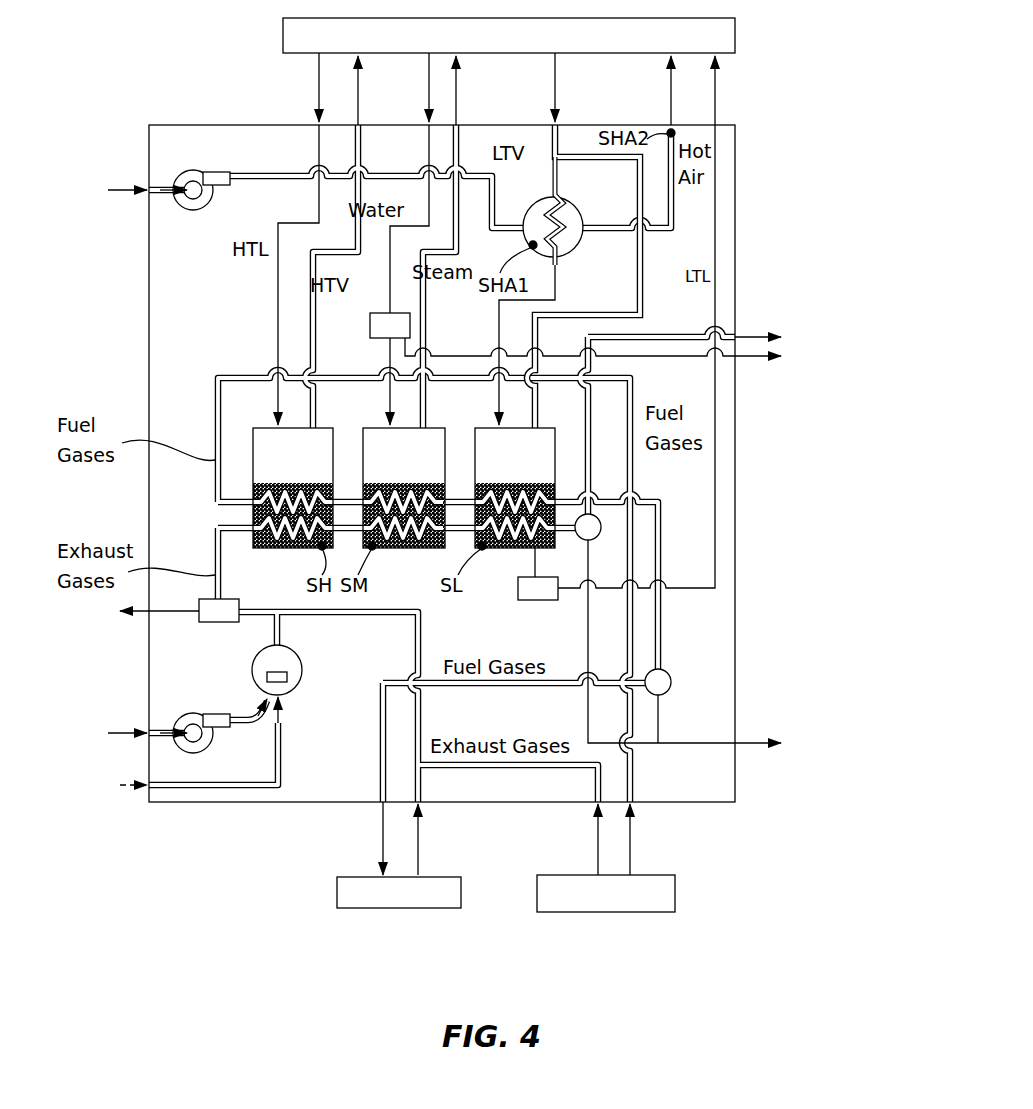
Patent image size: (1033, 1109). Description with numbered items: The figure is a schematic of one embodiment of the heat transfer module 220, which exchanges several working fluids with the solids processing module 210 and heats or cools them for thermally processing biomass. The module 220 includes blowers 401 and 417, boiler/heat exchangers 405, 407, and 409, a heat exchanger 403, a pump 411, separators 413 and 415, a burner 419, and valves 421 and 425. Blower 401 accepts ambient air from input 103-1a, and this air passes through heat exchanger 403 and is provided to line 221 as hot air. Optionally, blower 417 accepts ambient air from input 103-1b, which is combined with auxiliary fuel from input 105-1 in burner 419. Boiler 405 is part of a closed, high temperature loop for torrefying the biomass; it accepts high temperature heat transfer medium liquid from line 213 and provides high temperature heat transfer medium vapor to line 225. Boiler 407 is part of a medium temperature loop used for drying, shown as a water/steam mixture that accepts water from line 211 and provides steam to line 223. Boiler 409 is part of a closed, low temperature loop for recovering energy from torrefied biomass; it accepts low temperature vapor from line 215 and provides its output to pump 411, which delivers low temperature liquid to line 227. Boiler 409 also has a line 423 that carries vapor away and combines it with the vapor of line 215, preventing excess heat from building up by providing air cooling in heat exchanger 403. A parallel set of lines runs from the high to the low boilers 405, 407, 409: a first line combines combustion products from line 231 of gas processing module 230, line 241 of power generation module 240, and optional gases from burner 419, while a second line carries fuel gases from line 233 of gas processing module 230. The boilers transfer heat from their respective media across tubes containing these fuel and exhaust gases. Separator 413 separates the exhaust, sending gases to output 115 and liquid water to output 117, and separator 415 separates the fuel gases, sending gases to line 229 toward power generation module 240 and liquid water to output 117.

The solids processing module 210 is at (509, 35).
The heat transfer module 220 is at (156, 92).
The line 213 is at (319, 66).
The line 225 is at (358, 85).
The line 211 is at (429, 88).
The line 223 is at (458, 78).
The line 215 is at (555, 82).
The line 221 is at (671, 75).
The line 227 is at (715, 105).
The blower 401 is at (218, 170).
The heat exchanger 403 is at (622, 270).
The line 423 is at (618, 193).
The valve 425 is at (370, 324).
The boiler 405 is at (294, 558).
The boiler 407 is at (430, 558).
The boiler 409 is at (521, 558).
The pump 411 is at (517, 600).
The separator 413 is at (597, 535).
The separator 415 is at (668, 672).
The blower 417 is at (220, 712).
The burner 419 is at (306, 670).
The valve 421 is at (218, 624).
The line 229 is at (380, 830).
The line 241 is at (420, 840).
The line 231 is at (592, 815).
The line 233 is at (635, 815).
The power generation module 240 is at (399, 892).
The gas processing module 230 is at (606, 893).
The output 115 is at (143, 620).
The output 117 is at (766, 362).
The input 103-1a is at (122, 213).
The input 103-1b is at (138, 728).
The input 105-1 is at (100, 833).